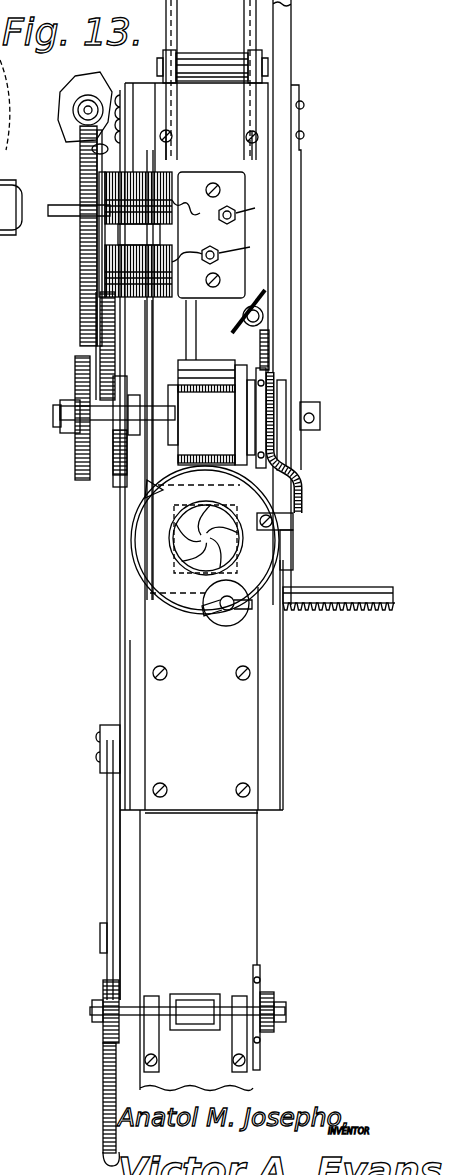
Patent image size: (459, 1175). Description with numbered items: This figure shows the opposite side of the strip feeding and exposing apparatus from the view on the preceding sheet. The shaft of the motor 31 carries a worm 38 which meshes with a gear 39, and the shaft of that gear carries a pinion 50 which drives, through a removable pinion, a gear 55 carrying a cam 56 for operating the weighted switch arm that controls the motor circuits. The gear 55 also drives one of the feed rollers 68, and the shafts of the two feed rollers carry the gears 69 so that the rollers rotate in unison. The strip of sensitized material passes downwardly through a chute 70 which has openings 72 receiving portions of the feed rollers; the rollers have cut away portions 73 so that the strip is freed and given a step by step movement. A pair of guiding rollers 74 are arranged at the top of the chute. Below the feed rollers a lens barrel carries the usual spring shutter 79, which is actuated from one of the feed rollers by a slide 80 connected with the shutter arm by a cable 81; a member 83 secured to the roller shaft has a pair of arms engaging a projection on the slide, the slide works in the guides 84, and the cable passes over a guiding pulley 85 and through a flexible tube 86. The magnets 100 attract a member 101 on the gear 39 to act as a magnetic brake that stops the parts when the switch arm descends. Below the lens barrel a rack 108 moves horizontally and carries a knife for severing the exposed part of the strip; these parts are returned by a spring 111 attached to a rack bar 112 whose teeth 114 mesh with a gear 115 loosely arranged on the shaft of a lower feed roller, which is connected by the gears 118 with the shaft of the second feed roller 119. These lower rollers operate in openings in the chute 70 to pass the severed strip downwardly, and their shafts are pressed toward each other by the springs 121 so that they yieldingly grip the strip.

The motor 31 is at (100, 84).
The worm 38 is at (80, 100).
The gear 39 is at (80, 168).
The pinion 50 is at (82, 244).
The gear 55 is at (100, 344).
The cam 56 is at (112, 344).
The feed rollers 68 is at (200, 368).
The gears 69 is at (75, 455).
The chute 70 is at (250, 850).
The openings 72 is at (173, 380).
The cut away portions 73 is at (175, 440).
The guiding rollers 74 is at (206, 62).
The spring shutter 79 is at (230, 544).
The slide 80 is at (284, 376).
The cable 81 is at (272, 344).
The member 83 is at (282, 398).
The guides 84 is at (285, 445).
The guiding pulley 85 is at (266, 313).
The flexible tube 86 is at (303, 474).
The magnets 100 is at (165, 175).
The member 101 is at (80, 149).
The rack 108 is at (340, 606).
The spring 111 is at (103, 1162).
The rack bar 112 is at (110, 882).
The teeth 114 is at (103, 1108).
The gear 115 is at (105, 1026).
The gears 118 is at (282, 1002).
The second feed roller 119 is at (197, 996).
The springs 121 is at (232, 1040).